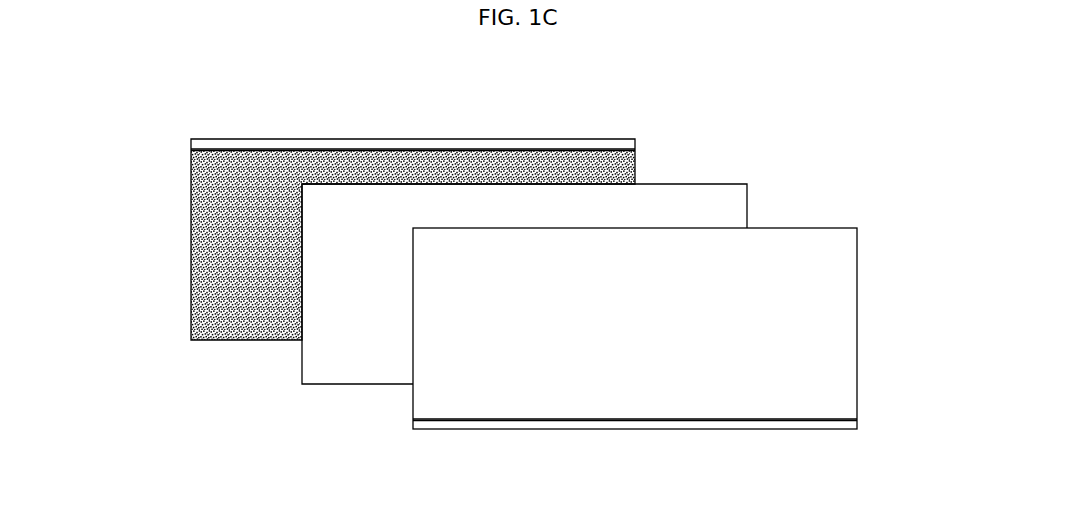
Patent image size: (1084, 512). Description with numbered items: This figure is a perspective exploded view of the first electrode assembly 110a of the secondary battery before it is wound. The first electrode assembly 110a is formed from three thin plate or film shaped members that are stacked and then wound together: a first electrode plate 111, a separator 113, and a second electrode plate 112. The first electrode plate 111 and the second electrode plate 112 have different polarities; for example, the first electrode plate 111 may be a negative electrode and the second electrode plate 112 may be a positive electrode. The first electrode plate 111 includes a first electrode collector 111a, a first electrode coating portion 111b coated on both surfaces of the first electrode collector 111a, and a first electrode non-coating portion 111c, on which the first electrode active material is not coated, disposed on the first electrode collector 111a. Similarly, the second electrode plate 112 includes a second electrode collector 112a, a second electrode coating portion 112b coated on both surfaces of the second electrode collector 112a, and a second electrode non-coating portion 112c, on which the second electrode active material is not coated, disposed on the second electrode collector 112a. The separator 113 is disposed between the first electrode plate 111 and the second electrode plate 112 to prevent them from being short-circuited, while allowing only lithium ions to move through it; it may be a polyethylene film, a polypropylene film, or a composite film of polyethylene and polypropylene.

The first electrode assembly 110a is at (858, 82).
The first electrode plate 111 is at (399, 217).
The first electrode collector 111a is at (183, 194).
The first electrode coating portion 111b is at (195, 157).
The first electrode non-coating portion 111c is at (218, 147).
The second electrode plate 112 is at (627, 334).
The second electrode collector 112a is at (404, 405).
The second electrode coating portion 112b is at (446, 415).
The second electrode non-coating portion 112c is at (500, 424).
The separator 113 is at (766, 176).